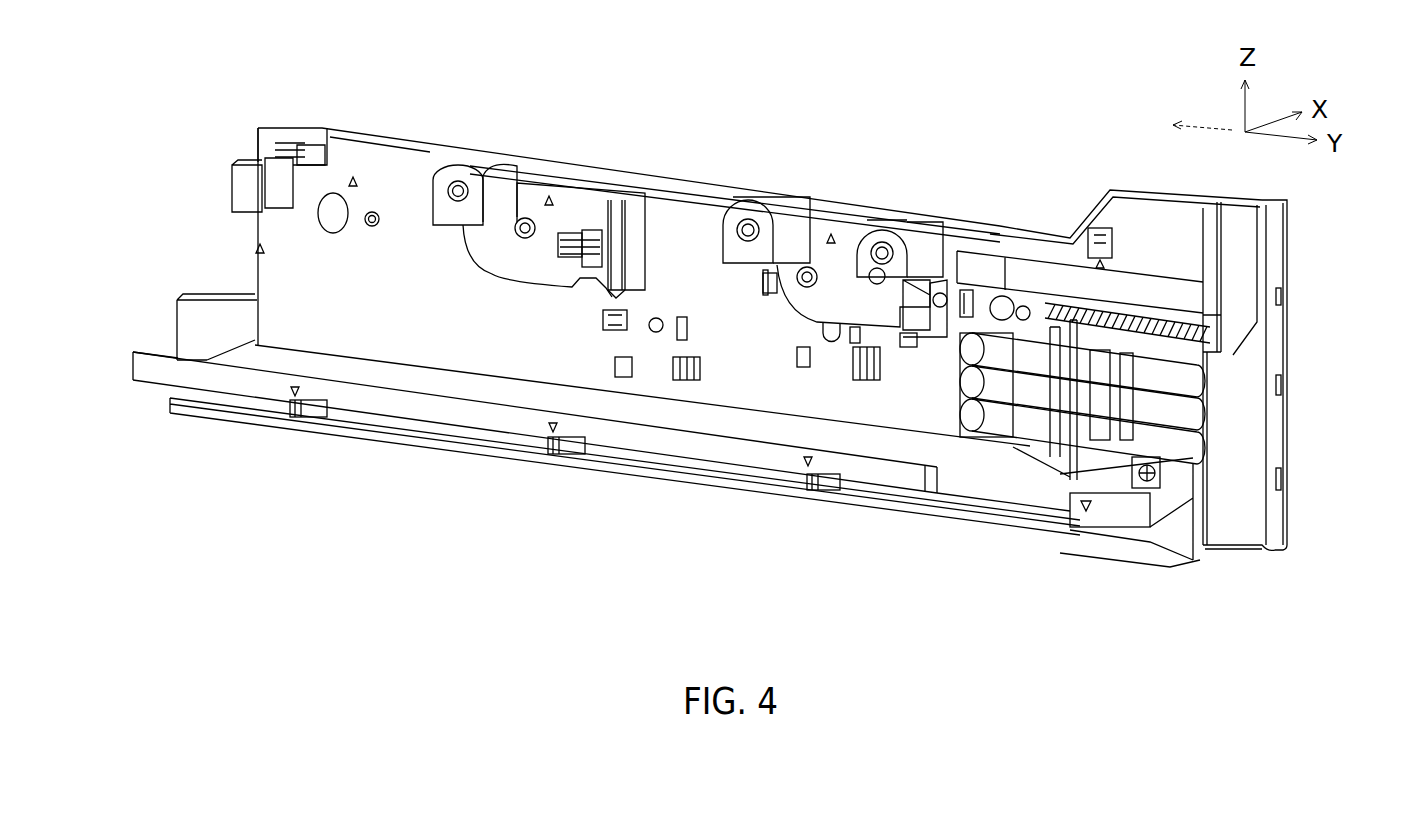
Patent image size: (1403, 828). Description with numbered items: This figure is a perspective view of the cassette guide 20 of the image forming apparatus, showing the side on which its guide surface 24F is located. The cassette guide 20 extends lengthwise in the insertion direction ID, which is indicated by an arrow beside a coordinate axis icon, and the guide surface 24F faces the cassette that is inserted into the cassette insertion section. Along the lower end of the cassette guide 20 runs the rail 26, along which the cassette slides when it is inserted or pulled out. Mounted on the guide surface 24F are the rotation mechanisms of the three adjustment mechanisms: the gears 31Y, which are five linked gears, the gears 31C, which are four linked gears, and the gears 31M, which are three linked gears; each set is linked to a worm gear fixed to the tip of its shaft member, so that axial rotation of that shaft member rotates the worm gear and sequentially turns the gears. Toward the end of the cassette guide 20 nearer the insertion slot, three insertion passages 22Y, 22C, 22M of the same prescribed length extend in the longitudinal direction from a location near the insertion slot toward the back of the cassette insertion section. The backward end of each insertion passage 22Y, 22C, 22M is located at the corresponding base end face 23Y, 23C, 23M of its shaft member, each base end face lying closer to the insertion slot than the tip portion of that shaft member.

The cassette guide 20 is at (676, 110).
The guide surface 24F is at (406, 242).
The gears 31Y is at (485, 163).
The gears 31C is at (777, 200).
The gears 31M is at (908, 237).
The base end face 23M is at (1002, 333).
The insertion passage 22M is at (1203, 376).
The insertion passage 22C is at (1203, 410).
The insertion passage 22Y is at (1203, 444).
The rail 26 is at (953, 467).
The base end face 23Y is at (1050, 400).
The base end face 23C is at (1057, 415).
The insertion direction ID is at (1212, 128).